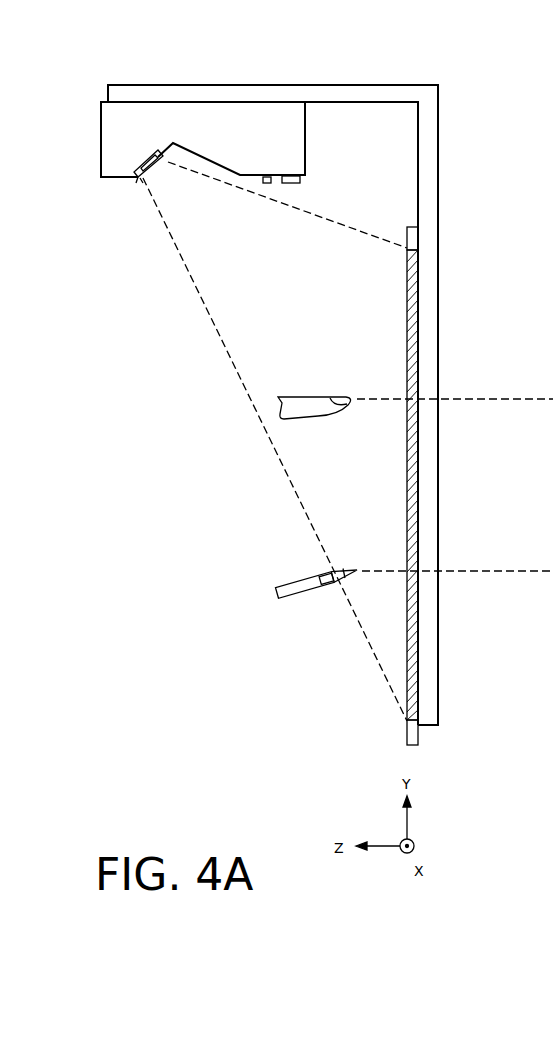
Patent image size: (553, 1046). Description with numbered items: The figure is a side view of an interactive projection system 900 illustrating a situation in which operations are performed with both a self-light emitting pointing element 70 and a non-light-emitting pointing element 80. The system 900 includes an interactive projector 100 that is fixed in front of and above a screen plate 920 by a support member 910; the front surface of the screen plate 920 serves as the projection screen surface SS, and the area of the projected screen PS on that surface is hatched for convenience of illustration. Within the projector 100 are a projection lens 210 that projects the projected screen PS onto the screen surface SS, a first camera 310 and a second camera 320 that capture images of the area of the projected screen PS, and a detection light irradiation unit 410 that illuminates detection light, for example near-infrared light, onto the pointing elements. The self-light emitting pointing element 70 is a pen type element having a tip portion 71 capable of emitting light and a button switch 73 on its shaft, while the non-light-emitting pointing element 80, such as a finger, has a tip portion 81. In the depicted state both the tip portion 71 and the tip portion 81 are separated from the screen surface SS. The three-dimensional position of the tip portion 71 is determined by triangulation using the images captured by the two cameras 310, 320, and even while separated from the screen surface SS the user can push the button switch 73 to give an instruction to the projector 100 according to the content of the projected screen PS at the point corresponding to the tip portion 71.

The interactive projector 100 is at (247, 112).
The projection lens 210 is at (138, 180).
The first camera 310 is at (142, 160).
The second camera 320 is at (300, 177).
The detection light irradiation unit 410 is at (267, 185).
The interactive projection system 900 is at (473, 119).
The support member 910 is at (432, 220).
The screen plate 920 is at (413, 240).
The projected screen PS is at (406, 343).
The projection screen surface SS is at (406, 240).
The non-light-emitting pointing element 80 is at (306, 398).
The tip portion 81 is at (353, 398).
The self-light emitting pointing element 70 is at (272, 589).
The tip portion 71 is at (360, 566).
The button switch 73 is at (320, 592).